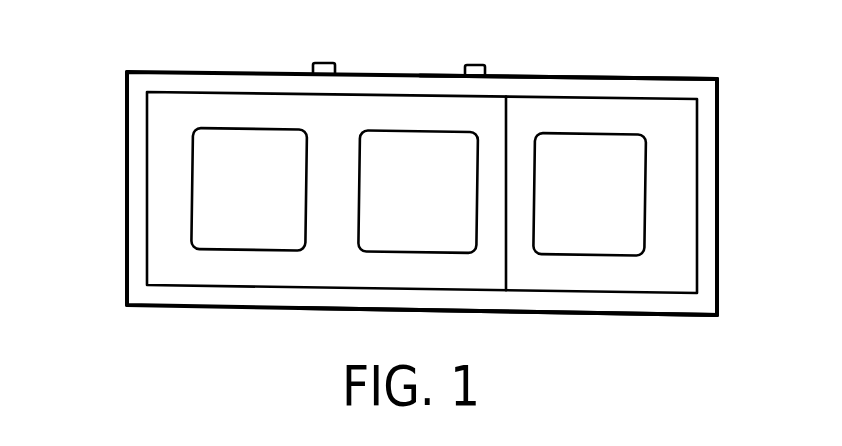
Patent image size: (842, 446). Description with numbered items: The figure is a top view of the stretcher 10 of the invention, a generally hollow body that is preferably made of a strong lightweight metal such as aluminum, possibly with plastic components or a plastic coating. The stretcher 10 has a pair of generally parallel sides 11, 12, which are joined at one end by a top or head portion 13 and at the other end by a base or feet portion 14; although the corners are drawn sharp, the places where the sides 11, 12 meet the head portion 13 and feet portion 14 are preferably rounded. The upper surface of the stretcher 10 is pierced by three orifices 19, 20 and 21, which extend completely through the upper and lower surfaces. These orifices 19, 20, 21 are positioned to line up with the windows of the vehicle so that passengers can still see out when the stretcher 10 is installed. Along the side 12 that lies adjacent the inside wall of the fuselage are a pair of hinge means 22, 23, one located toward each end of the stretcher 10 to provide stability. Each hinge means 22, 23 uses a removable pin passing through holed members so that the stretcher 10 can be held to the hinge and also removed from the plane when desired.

The stretcher 10 is at (127, 175).
The side 11 is at (632, 315).
The side 12 is at (617, 78).
The top or head portion 13 is at (720, 177).
The base or feet portion 14 is at (127, 265).
The orifice 19 is at (235, 137).
The orifice 20 is at (389, 128).
The orifice 21 is at (570, 130).
The hinge means 22 is at (335, 27).
The hinge means 23 is at (472, 64).